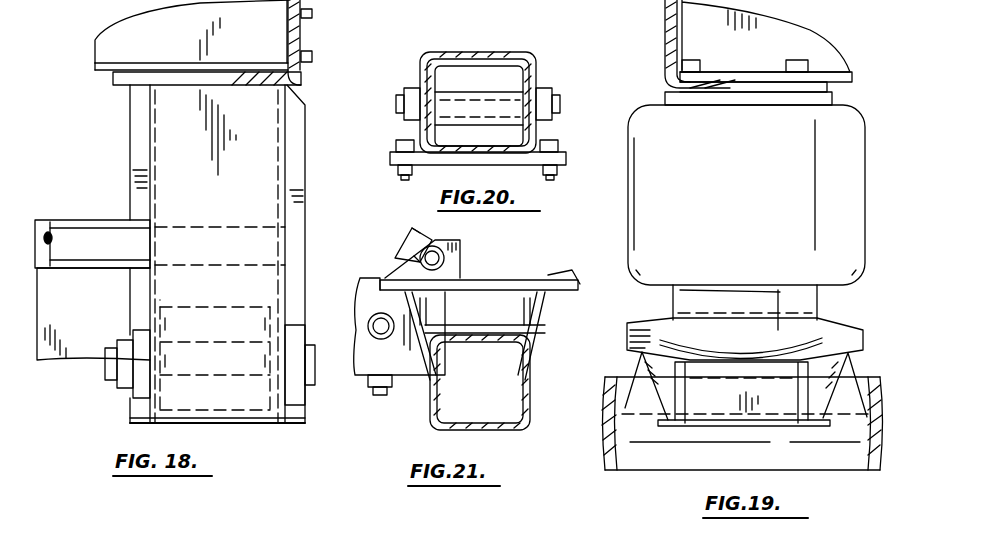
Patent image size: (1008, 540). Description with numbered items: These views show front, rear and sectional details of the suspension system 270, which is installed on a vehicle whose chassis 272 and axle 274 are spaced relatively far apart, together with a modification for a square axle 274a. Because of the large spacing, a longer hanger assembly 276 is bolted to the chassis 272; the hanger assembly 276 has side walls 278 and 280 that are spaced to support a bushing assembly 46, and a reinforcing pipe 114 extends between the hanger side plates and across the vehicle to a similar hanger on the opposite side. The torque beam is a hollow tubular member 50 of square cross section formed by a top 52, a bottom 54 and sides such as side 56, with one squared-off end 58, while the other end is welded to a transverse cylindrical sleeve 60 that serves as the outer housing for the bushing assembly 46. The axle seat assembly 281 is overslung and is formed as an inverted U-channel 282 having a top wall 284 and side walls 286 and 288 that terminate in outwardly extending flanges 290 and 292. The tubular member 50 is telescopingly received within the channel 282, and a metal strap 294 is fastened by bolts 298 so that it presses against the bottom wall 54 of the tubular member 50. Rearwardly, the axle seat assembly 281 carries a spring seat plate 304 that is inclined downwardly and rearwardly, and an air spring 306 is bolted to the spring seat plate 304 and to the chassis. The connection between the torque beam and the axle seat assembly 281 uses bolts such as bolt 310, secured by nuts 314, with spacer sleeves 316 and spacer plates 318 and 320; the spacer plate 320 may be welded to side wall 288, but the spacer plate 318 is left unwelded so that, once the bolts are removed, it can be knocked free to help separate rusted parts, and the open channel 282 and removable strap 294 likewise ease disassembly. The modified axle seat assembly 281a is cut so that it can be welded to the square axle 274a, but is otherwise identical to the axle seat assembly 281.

In FIG. 18, the bushing assembly 46 is at (176, 398).
In FIG. 20, the hollow tubular member 50 is at (428, 58).
In FIG. 20, the top 52 is at (510, 56).
In FIG. 20, the bottom 54 is at (438, 162).
In FIG. 20, the side 56 is at (420, 80).
In FIG. 20, the end 58 is at (536, 78).
In FIG. 18, the transverse cylindrical sleeve 60 is at (260, 425).
In FIG. 18, the reinforcing pipe 114 is at (72, 236).
In FIG. 20, the suspension system 270 is at (596, 0).
In FIG. 18, the chassis 272 is at (300, 33).
In FIG. 19, the chassis 272 is at (664, 70).
In FIG. 20, the axle 274 is at (560, 0).
In FIG. 19, the axle 274 is at (842, 460).
In FIG. 21, the square axle 274a is at (432, 428).
In FIG. 18, the hanger assembly 276 is at (145, 136).
In FIG. 18, the side wall 278 is at (286, 170).
In FIG. 18, the side wall 280 is at (140, 158).
In FIG. 19, the axle seat assembly 281 is at (853, 358).
In FIG. 21, the modified axle seat assembly 281a is at (514, 272).
In FIG. 20, the inverted U-channel 282 is at (528, 62).
In FIG. 20, the top wall 284 is at (480, 55).
In FIG. 20, the side wall 286 is at (420, 72).
In FIG. 20, the side wall 288 is at (545, 88).
In FIG. 20, the flange 290 is at (386, 150).
In FIG. 20, the flange 292 is at (568, 150).
In FIG. 20, the metal strap 294 is at (482, 162).
In FIG. 20, the bolts 298 is at (404, 180).
In FIG. 19, the spring seat plate 304 is at (838, 328).
In FIG. 19, the air spring 306 is at (867, 140).
In FIG. 20, the bolt 310 is at (552, 102).
In FIG. 20, the nuts 314 is at (404, 98).
In FIG. 20, the spacer sleeves 316 is at (465, 128).
In FIG. 20, the spacer plate 318 is at (418, 127).
In FIG. 20, the spacer plate 320 is at (540, 126).